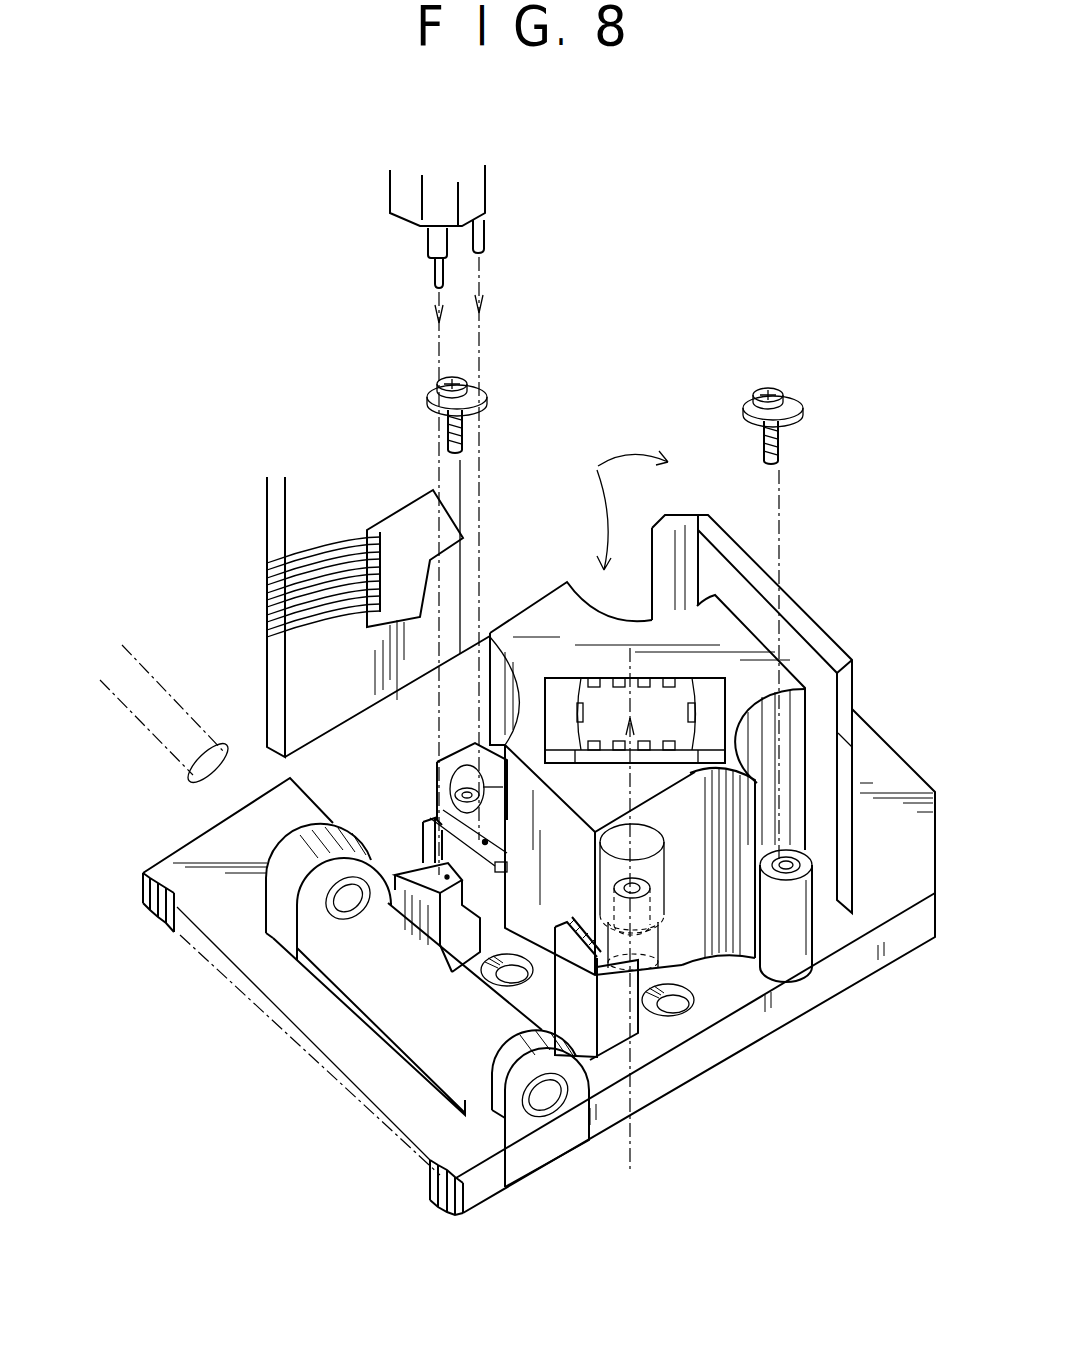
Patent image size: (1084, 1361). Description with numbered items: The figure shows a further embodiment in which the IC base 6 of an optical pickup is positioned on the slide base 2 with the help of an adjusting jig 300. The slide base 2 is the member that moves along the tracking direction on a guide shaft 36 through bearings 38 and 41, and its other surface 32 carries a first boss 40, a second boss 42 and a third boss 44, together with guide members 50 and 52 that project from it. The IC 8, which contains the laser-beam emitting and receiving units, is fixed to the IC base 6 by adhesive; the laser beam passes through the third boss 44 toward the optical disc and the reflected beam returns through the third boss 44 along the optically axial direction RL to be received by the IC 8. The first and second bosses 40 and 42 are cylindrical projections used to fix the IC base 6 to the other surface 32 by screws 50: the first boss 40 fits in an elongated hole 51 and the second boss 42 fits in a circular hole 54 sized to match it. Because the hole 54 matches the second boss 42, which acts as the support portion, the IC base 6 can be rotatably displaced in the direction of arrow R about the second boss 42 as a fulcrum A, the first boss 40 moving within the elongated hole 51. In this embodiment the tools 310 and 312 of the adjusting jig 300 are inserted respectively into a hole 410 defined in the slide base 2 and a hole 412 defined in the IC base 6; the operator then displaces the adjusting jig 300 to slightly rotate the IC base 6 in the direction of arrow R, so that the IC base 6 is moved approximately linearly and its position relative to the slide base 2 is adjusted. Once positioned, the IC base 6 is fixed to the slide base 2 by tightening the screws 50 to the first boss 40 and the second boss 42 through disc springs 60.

The slide base 2 is at (747, 1033).
The IC base 6 is at (545, 615).
The IC 8 is at (628, 698).
The other surface 32 is at (897, 893).
The guide shaft 36 is at (172, 695).
The bearing 38 is at (280, 898).
The first boss 40 is at (450, 788).
The bearing 41 is at (487, 1083).
The second boss 42 is at (790, 862).
The third boss 44 is at (615, 892).
The screw 50 is at (452, 378).
The hole 51 is at (450, 757).
The guide member 52 is at (845, 697).
The hole 54 is at (800, 903).
The disc spring 60 is at (478, 393).
The adjusting jig 300 is at (478, 192).
The tool 310 is at (432, 268).
The tool 312 is at (488, 233).
The hole 410 is at (447, 873).
The hole 412 is at (485, 841).
The arrow R is at (618, 505).
The fulcrum A is at (780, 503).
The optically axial direction RL is at (635, 1135).